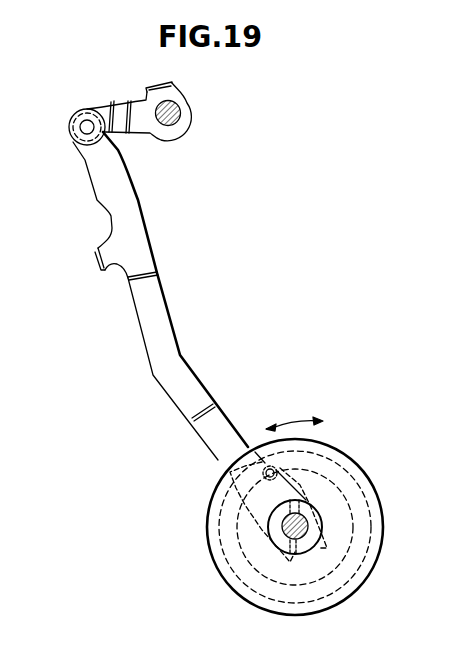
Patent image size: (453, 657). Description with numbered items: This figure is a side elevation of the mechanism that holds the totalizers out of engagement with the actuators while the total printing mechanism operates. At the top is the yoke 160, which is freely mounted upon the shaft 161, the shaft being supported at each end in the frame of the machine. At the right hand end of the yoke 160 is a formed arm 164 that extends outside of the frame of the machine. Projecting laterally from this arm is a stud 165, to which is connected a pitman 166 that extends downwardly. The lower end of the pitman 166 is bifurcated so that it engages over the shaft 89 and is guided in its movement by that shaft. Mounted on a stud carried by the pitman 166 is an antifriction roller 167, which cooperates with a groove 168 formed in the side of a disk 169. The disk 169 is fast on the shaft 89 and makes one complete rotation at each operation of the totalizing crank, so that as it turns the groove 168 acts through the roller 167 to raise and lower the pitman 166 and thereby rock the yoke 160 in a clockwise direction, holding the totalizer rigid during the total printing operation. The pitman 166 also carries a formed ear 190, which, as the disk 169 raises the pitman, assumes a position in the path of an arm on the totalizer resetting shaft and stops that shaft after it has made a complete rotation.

The yoke 160 is at (168, 82).
The shaft 161 is at (176, 112).
The formed arm 164 is at (152, 133).
The stud 165 is at (83, 128).
The pitman 166 is at (168, 317).
The formed ear 190 is at (112, 276).
The antifriction roller 167 is at (264, 480).
The shaft 89 is at (307, 520).
The disk 169 is at (382, 528).
The groove 168 is at (364, 541).